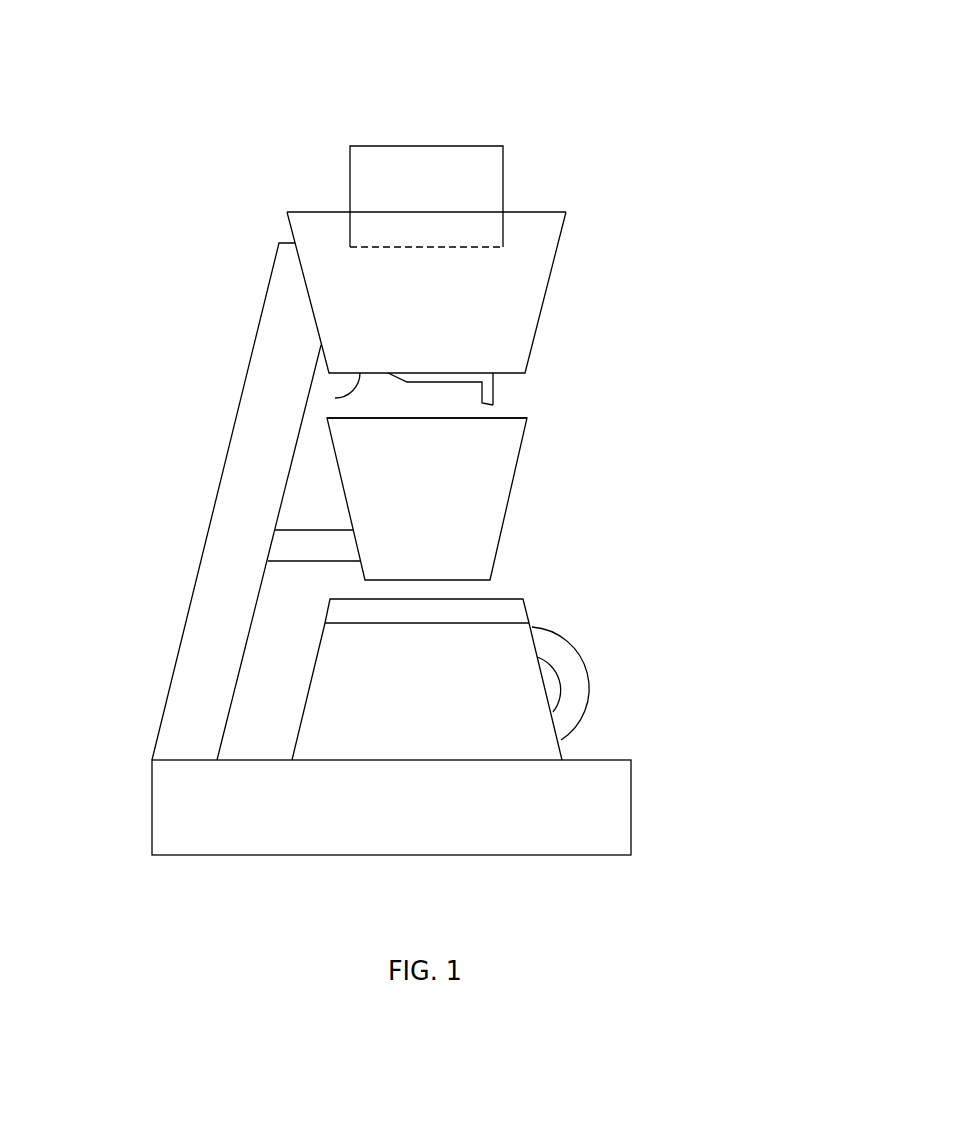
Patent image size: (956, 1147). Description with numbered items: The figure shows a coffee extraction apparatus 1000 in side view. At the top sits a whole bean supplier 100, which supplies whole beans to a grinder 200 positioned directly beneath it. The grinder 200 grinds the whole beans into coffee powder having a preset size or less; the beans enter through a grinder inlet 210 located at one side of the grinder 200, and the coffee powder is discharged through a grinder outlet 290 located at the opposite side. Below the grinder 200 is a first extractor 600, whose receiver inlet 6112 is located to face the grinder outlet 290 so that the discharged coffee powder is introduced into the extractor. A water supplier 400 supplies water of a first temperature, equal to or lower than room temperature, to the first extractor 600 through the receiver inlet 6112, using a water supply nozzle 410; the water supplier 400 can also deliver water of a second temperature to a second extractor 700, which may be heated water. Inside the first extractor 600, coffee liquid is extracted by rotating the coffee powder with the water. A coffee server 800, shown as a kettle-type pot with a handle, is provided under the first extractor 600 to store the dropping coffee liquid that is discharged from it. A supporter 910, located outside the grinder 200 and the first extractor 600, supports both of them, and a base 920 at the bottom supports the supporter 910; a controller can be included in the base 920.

The coffee extraction apparatus 1000 is at (60, 43).
The whole bean supplier 100 is at (504, 178).
The grinder inlet 210 is at (535, 211).
The grinder 200 is at (547, 299).
The grinder outlet 290 is at (506, 366).
The water supplier 400 is at (504, 385).
The water supply nozzle 410 is at (493, 402).
The first extractor 600 is at (560, 499).
The second extractor 700 is at (511, 498).
The receiver inlet 6112 is at (377, 418).
The supporter 910 is at (200, 545).
The coffee server 800 is at (600, 680).
The base 920 is at (633, 805).